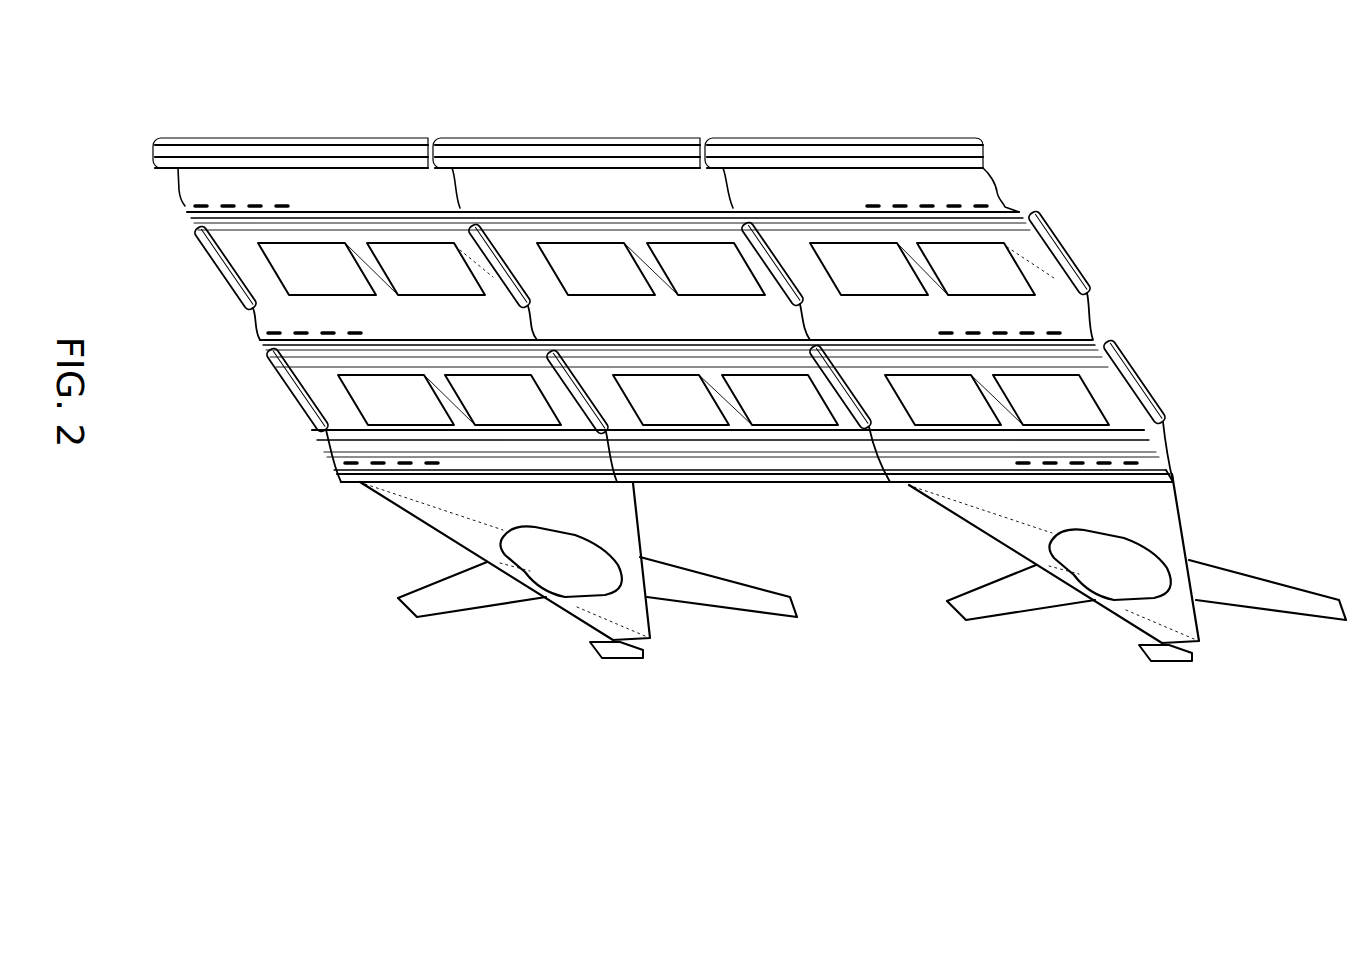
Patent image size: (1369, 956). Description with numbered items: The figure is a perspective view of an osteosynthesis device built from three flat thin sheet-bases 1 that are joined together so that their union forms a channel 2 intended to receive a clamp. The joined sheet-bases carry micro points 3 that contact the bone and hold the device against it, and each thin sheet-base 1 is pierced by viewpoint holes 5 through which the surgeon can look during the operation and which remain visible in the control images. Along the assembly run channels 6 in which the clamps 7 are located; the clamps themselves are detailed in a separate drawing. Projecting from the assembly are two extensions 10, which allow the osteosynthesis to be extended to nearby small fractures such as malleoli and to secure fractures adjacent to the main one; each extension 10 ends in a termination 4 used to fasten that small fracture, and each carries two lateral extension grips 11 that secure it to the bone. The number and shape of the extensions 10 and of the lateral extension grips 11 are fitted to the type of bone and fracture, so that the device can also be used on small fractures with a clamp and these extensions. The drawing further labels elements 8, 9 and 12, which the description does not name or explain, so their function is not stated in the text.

The thin sheet-base 1 is at (247, 238).
The channel for a clamp 2 is at (1098, 313).
The micro points 3 is at (260, 343).
The termination 4 is at (590, 641).
The viewpoint holes 5 is at (533, 567).
The channels 6 is at (1150, 443).
The clamps 7 is at (1163, 473).
The connecting clip 8 is at (160, 170).
The top rail 9 is at (982, 138).
The extension 10 is at (637, 522).
The lateral extension grips 11 is at (713, 577).
The tabs 12 is at (957, 203).